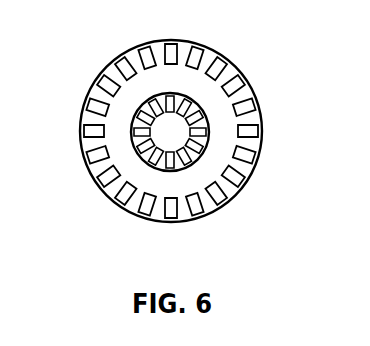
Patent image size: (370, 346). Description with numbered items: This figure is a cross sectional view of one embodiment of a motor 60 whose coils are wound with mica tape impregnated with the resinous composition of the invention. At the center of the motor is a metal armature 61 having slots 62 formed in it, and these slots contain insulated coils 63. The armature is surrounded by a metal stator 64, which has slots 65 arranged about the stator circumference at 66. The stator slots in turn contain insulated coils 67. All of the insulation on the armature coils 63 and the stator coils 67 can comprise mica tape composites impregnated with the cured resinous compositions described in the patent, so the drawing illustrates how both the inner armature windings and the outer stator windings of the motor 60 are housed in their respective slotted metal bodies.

The motor 60 is at (234, 250).
The metal armature 61 is at (160, 127).
The slots 62 is at (194, 96).
The insulated coils 63 is at (189, 174).
The metal stator 64 is at (126, 212).
The slots 65 is at (89, 117).
The stator circumference 66 is at (231, 60).
The insulated coils 67 is at (127, 67).